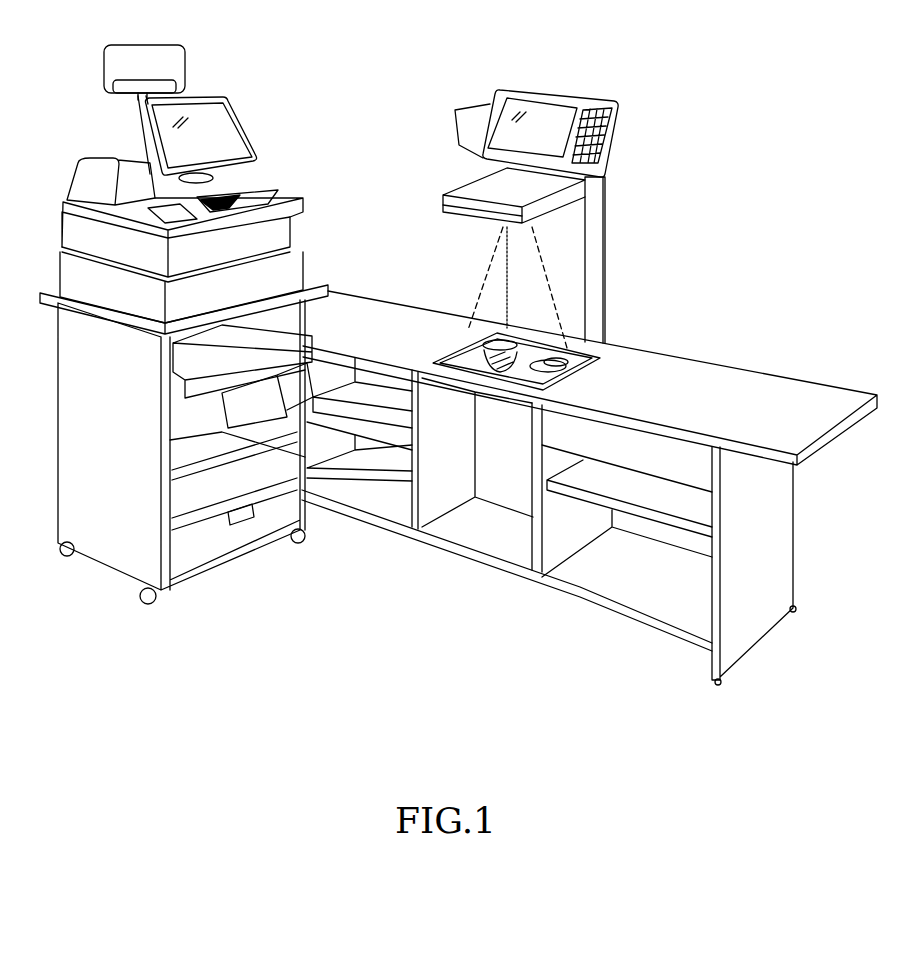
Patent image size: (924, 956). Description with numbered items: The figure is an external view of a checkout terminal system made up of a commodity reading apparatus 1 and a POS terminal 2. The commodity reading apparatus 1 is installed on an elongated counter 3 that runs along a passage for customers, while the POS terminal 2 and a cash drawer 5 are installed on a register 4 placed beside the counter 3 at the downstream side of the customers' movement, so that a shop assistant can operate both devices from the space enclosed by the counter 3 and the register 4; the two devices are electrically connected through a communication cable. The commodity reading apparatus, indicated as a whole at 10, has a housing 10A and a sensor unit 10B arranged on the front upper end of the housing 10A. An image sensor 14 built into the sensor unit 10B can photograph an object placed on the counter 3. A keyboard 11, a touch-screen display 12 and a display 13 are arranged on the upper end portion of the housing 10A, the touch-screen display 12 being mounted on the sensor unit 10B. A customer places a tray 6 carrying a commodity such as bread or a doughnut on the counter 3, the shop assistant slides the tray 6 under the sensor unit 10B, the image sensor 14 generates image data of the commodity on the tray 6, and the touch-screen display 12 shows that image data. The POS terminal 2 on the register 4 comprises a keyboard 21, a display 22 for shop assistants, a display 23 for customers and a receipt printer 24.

The commodity reading apparatus 1 is at (486, 70).
The POS terminal 2 is at (62, 193).
The counter 3 is at (735, 368).
The register 4 is at (58, 385).
The cash drawer 5 is at (60, 270).
The tray 6 is at (593, 363).
The commodity recognition apparatus 10 is at (549, 203).
The housing 10A is at (603, 282).
The sensor unit 10B is at (456, 187).
The keyboard 11 is at (620, 128).
The touch-screen display 12 is at (549, 100).
The display 13 is at (455, 125).
The image sensor 14 is at (466, 216).
The keyboard 21 is at (272, 193).
The display for shop assistants 22 is at (244, 124).
The display for customers 23 is at (188, 63).
The receipt printer 24 is at (100, 158).